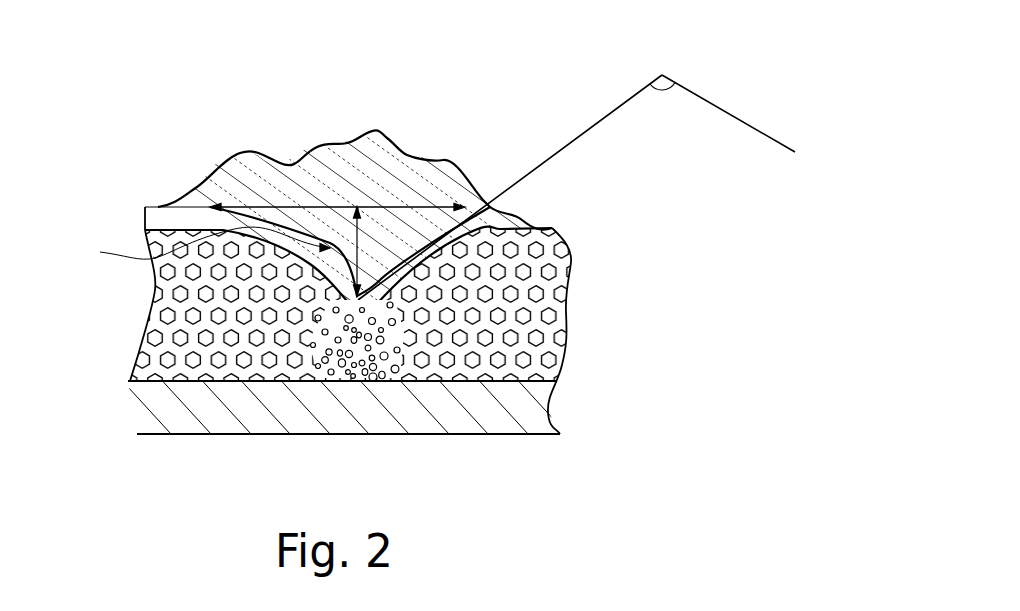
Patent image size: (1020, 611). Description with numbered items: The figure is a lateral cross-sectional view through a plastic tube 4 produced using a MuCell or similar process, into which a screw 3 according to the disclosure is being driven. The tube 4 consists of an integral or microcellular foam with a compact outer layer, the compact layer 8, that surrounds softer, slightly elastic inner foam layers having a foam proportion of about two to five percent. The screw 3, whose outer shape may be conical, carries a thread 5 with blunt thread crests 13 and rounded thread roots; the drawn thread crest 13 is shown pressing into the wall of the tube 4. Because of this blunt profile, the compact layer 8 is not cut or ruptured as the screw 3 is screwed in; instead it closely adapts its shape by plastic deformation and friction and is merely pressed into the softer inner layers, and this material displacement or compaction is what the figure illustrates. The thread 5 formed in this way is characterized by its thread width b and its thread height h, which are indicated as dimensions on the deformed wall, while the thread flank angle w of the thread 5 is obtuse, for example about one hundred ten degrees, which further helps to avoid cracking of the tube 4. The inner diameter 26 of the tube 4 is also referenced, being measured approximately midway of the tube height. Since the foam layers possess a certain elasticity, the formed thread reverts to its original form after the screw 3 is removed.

The screw 3 is at (445, 165).
The tube 4 is at (562, 280).
The thread 5 is at (207, 247).
The compact layer 8 is at (176, 218).
The crest of the thread 13 is at (358, 300).
The inner diameter of the tube 26 is at (492, 206).
The thread flank angle w is at (650, 76).
The thread width b is at (337, 194).
The thread height h is at (365, 251).